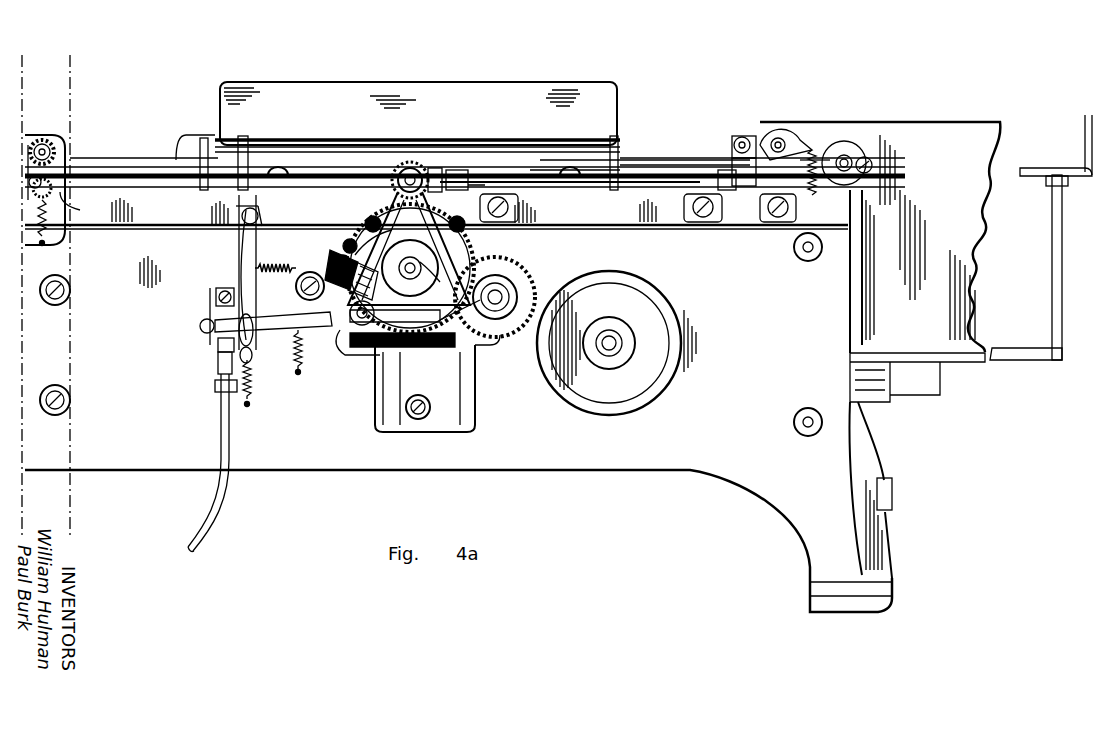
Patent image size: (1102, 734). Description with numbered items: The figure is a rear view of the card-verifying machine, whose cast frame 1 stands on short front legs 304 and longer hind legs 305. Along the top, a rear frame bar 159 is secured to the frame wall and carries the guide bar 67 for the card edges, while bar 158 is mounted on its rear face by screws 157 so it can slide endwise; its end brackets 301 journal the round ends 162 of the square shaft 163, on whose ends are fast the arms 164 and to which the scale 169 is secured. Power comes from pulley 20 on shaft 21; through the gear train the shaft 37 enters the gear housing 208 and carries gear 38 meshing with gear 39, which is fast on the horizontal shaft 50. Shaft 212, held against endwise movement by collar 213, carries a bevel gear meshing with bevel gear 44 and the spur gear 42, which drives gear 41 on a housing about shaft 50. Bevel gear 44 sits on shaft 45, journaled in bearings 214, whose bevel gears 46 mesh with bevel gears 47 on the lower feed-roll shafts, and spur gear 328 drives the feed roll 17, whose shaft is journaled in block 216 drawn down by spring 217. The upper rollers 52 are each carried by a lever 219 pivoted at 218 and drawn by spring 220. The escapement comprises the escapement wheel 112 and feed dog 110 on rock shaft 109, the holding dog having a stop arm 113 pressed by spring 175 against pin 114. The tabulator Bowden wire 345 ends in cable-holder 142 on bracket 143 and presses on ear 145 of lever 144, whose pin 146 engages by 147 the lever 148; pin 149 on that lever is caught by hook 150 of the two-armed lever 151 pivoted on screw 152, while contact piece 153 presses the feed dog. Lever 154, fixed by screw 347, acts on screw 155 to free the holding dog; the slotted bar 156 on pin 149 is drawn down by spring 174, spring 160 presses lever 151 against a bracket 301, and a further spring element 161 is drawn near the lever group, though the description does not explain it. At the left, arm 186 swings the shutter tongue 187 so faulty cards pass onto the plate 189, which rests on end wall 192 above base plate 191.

The frame 1 is at (458, 405).
The feed roll 17 is at (30, 140).
The pulley 20 is at (632, 390).
The shaft 21 is at (615, 338).
The shaft 37 is at (516, 290).
The gear 38 is at (510, 268).
The gear 39 is at (430, 262).
The gear 41 is at (478, 234).
The spur gear 42 is at (410, 165).
The bevel gear 44 is at (448, 168).
The shaft 45 is at (135, 172).
The bevel gear 46 is at (80, 198).
The bevel gear 47 is at (45, 188).
The horizontal shaft 50 is at (438, 280).
The feed roll 52 is at (785, 138).
The guide bar 67 is at (100, 160).
The rock shaft 109 is at (418, 290).
The feed dog 110 is at (345, 242).
The escapement wheel 112 is at (405, 256).
The stop arm 113 is at (336, 260).
The pin 114 is at (350, 272).
The cable-holder 142 is at (220, 362).
The bracket 143 is at (210, 306).
The lever 144 is at (200, 326).
The ear 145 is at (218, 342).
The pin 146 is at (252, 345).
The engaging means 147 is at (262, 306).
The lever 148 is at (300, 284).
The pin 149 is at (223, 288).
The hook 150 is at (244, 315).
The two-armed lever 151 is at (240, 216).
The pivot screw 152 is at (262, 216).
The contact piece 153 is at (345, 306).
The two-armed lever 154 is at (360, 350).
The screw 155 is at (400, 355).
The slotted bar 156 is at (238, 195).
The screw 157 is at (276, 168).
The bar 158 is at (535, 162).
The rear frame bar 159 is at (635, 160).
The spring 160 is at (240, 245).
The spring 161 is at (296, 266).
The round end 162 is at (243, 136).
The square shaft 163 is at (340, 158).
The arm 164 is at (204, 140).
The scale 169 is at (325, 90).
The spring 174 is at (252, 398).
The spring 175 is at (438, 402).
The arm 186 is at (858, 178).
The shutter tongue 187 is at (880, 145).
The horizontal plate 189 is at (1048, 168).
The base plate 191 is at (1018, 348).
The end wall 192 is at (1052, 258).
The gear housing 208 is at (485, 348).
The horizontal shaft 212 is at (398, 188).
The collar 213 is at (395, 200).
The bearing 214 is at (515, 186).
The block 216 is at (62, 160).
The spring 217 is at (46, 238).
The pivot 218 is at (740, 135).
The lever 219 is at (760, 140).
The spring 220 is at (815, 148).
The end bracket 301 is at (240, 155).
The front leg 304 is at (890, 490).
The hind leg 305 is at (890, 562).
The spur gear 328 is at (60, 133).
The wire 345 is at (185, 548).
The screw 347 is at (304, 340).